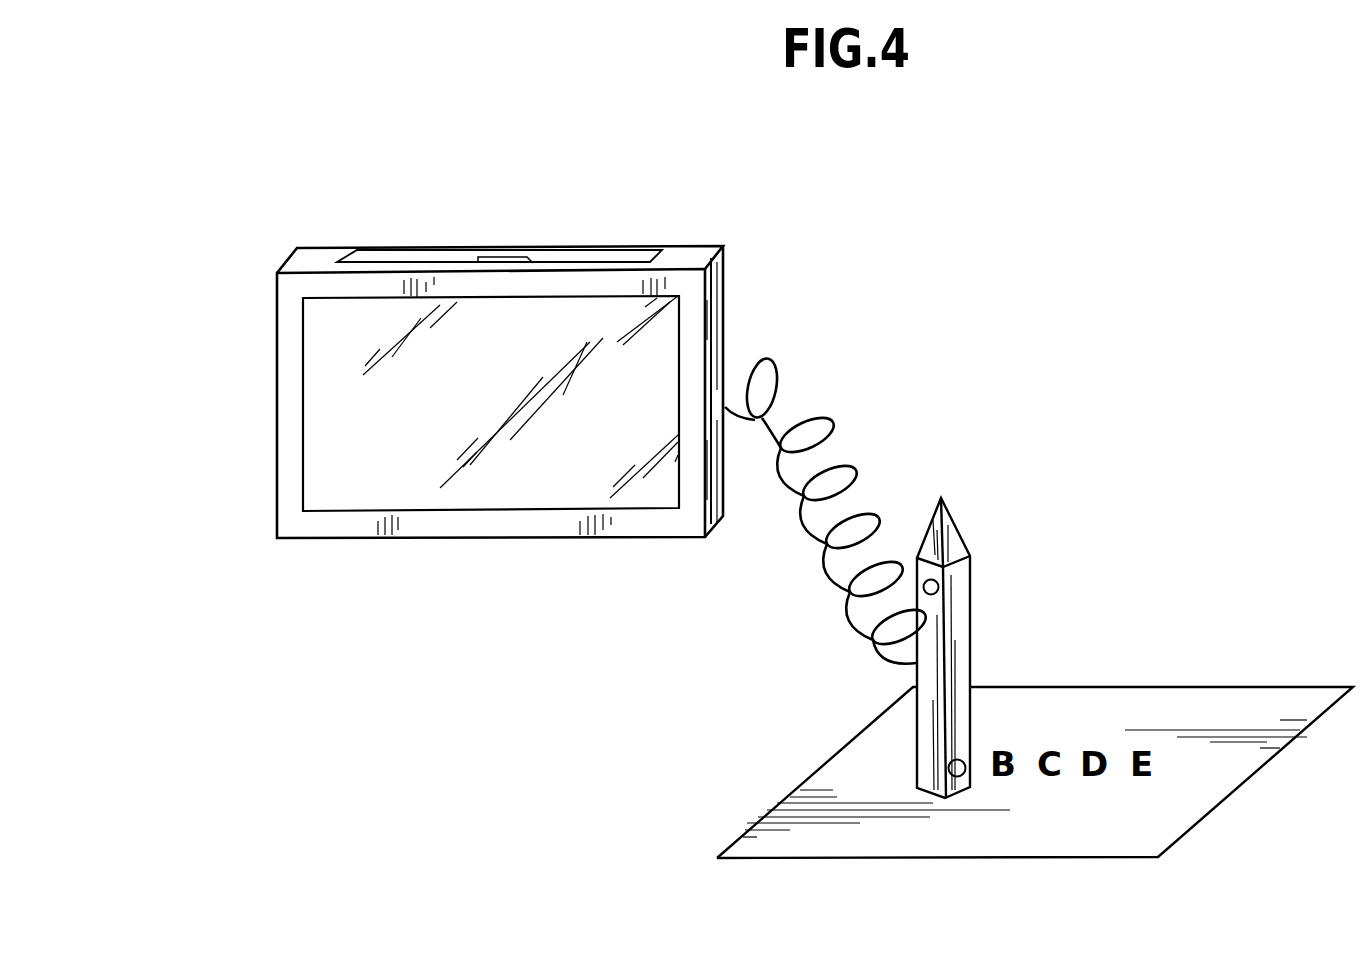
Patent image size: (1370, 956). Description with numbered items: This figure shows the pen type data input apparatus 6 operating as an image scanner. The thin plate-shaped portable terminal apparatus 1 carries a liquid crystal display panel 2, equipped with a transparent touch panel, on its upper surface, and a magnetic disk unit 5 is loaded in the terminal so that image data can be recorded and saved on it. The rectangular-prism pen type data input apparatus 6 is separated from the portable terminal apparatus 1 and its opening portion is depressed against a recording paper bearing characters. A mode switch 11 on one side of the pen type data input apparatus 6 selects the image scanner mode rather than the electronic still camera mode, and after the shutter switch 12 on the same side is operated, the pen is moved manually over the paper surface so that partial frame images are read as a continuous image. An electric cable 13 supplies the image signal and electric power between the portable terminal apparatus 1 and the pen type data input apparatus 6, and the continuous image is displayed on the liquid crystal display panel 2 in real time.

The portable terminal apparatus 1 is at (732, 302).
The liquid crystal display panel 2 is at (610, 330).
The magnetic disk unit 5 is at (583, 253).
The pen type data input apparatus 6 is at (954, 650).
The mode switch 11 is at (936, 585).
The shutter switch 12 is at (963, 760).
The electric cable 13 is at (827, 421).